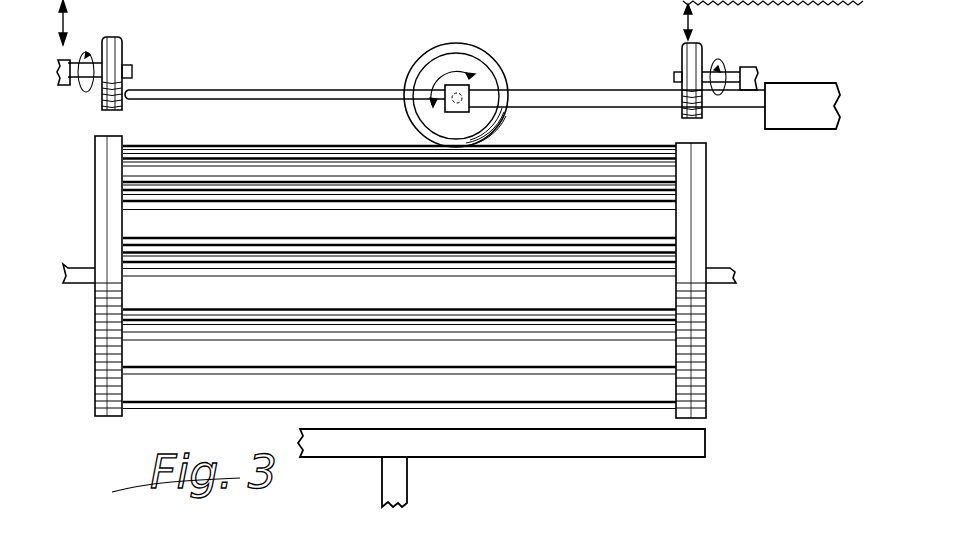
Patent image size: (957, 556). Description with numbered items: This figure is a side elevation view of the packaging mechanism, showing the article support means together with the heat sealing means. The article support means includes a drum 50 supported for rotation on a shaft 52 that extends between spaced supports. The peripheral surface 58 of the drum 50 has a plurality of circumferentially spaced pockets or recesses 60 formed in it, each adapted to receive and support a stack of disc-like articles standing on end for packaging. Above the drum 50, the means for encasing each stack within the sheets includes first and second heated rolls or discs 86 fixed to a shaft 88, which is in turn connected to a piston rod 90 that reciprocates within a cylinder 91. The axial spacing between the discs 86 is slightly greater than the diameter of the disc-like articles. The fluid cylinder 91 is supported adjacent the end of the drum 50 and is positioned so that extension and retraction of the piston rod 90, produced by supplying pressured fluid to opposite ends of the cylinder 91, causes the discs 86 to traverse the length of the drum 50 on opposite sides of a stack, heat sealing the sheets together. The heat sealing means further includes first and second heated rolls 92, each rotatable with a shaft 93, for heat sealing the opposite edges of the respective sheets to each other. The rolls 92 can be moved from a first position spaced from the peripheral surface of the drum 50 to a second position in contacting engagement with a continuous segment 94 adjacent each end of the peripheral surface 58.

The drum 50 is at (711, 346).
The shaft 52 is at (82, 268).
The peripheral surface 58 is at (127, 244).
The recesses 60 is at (646, 231).
The heated rolls or discs 86 is at (485, 68).
The shaft 88 is at (452, 96).
The piston rod 90 is at (536, 98).
The cylinder 91 is at (800, 83).
The heated rolls 92 is at (120, 58).
The shafts 93 is at (131, 72).
The continuous segment 94 is at (106, 340).